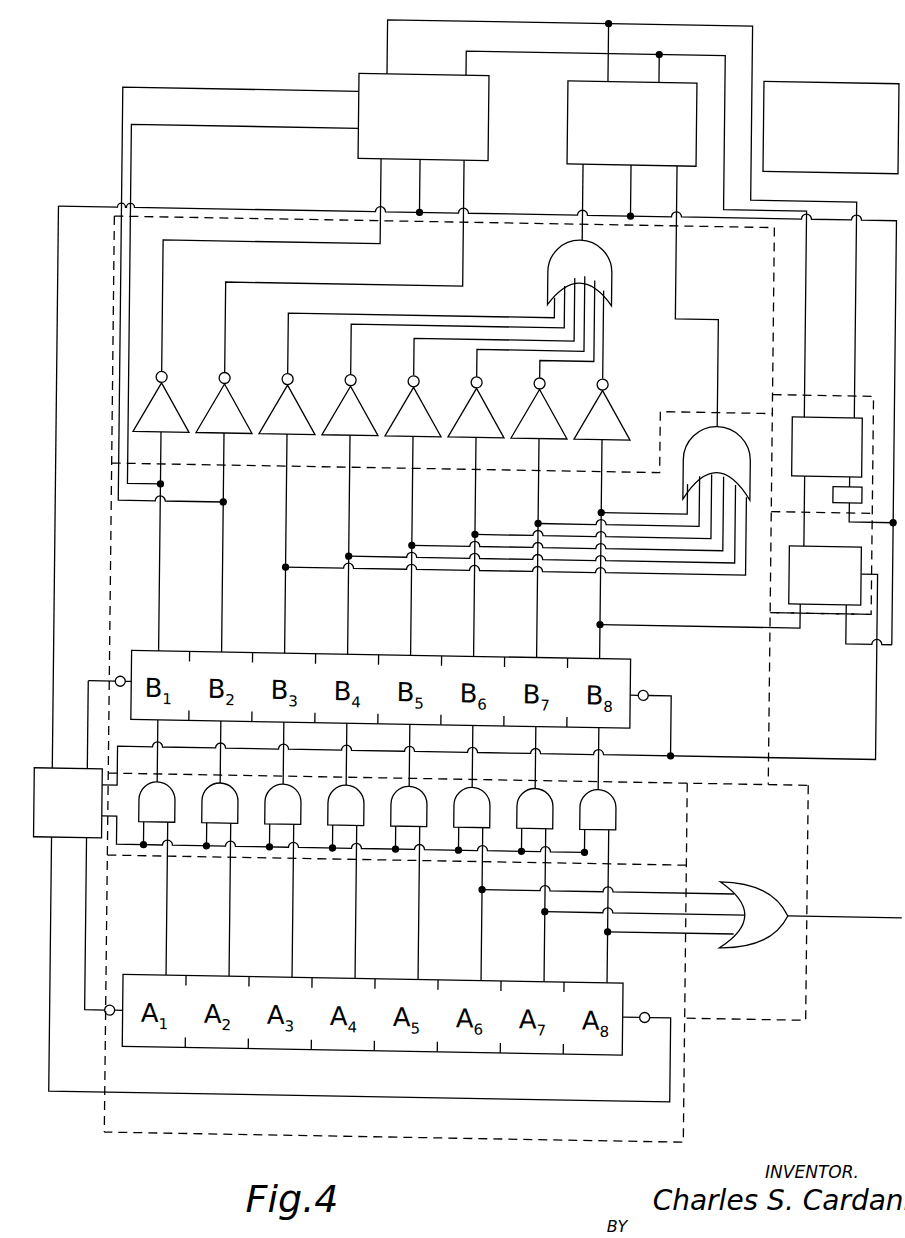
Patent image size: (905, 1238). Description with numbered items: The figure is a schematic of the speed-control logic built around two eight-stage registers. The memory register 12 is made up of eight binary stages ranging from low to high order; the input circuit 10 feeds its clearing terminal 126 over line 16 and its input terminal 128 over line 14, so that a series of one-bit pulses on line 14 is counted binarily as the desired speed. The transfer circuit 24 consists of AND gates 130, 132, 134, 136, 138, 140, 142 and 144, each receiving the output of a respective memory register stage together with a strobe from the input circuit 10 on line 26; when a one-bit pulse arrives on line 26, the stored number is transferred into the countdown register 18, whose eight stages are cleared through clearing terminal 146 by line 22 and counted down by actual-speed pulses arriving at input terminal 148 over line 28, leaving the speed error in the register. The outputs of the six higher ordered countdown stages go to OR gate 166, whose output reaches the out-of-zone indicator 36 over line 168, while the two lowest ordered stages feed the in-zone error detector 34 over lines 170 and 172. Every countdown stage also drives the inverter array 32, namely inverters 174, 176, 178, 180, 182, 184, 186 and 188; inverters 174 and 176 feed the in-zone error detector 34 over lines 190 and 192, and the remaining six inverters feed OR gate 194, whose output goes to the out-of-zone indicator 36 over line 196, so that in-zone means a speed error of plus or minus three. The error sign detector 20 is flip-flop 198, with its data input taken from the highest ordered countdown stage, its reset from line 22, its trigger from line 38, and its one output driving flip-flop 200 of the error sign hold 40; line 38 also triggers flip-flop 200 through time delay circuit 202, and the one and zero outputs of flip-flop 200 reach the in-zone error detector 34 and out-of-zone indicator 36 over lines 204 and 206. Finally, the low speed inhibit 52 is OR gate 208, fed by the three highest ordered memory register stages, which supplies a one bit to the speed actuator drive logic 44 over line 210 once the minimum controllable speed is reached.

The input circuit 10 is at (68, 775).
The memory register 12 is at (689, 1112).
The line 14 is at (89, 990).
The line 16 is at (67, 1100).
The countdown register 18 is at (110, 535).
The error sign detector 20 is at (834, 607).
The line 22 is at (164, 752).
The transfer circuit 24 is at (112, 858).
The line 26 is at (176, 852).
The line 28 is at (108, 658).
The inverter array 32 is at (110, 305).
The in-zone error detector 34 is at (483, 140).
The out-of-zone indicator 36 is at (680, 165).
The line 38 is at (880, 213).
The error sign hold 40 is at (866, 389).
The speed actuator drive logic 44 is at (835, 76).
The low speed inhibit 52 is at (745, 1016).
The clearing terminal 126 is at (651, 1008).
The input terminal 128 is at (116, 1010).
The AND gate 130 is at (158, 815).
The AND gate 132 is at (222, 815).
The AND gate 134 is at (285, 815).
The AND gate 136 is at (348, 815).
The AND gate 138 is at (411, 815).
The AND gate 140 is at (474, 815).
The AND gate 142 is at (537, 815).
The AND gate 144 is at (617, 810).
The clearing terminal 146 is at (650, 690).
The input terminal 148 is at (118, 682).
The OR gate 166 is at (683, 472).
The line 168 is at (672, 292).
The line 170 is at (126, 187).
The line 172 is at (117, 128).
The inverter 174 is at (168, 405).
The inverter 176 is at (232, 405).
The inverter 178 is at (290, 410).
The inverter 180 is at (355, 410).
The inverter 182 is at (420, 410).
The inverter 184 is at (483, 410).
The inverter 186 is at (547, 415).
The inverter 188 is at (612, 415).
The line 190 is at (159, 289).
The line 192 is at (222, 332).
The OR gate 194 is at (562, 262).
The line 196 is at (577, 193).
The flip-flop 198 is at (826, 598).
The flip-flop 200 is at (810, 411).
The time delay circuit 202 is at (832, 500).
The line 204 is at (803, 250).
The line 206 is at (852, 272).
The OR gate 208 is at (752, 892).
The line 210 is at (846, 910).